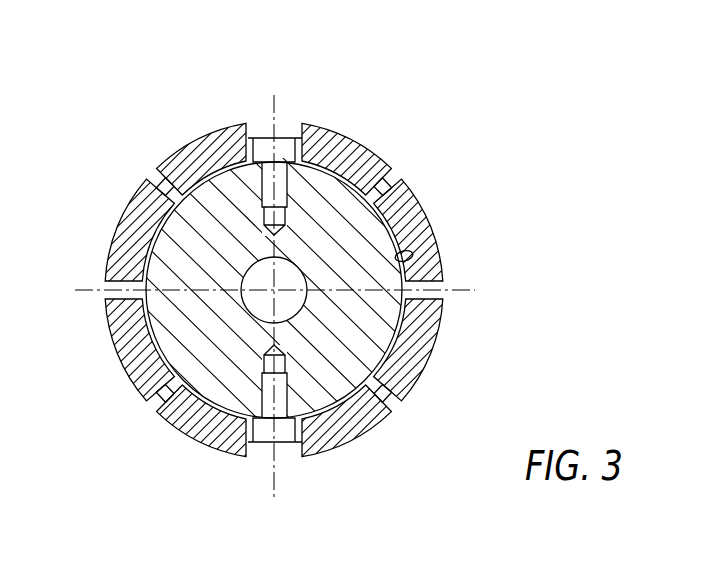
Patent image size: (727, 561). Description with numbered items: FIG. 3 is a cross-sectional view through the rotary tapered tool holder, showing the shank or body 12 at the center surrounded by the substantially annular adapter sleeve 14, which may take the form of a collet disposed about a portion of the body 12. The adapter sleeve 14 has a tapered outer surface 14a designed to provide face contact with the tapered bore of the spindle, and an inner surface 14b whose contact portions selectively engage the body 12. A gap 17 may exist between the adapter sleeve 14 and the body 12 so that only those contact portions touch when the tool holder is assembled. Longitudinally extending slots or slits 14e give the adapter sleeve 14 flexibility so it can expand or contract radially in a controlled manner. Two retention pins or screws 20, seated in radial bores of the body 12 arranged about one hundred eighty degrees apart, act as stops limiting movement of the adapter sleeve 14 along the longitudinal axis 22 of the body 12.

The shank or body 12 is at (196, 240).
The adapter sleeve 14 is at (317, 267).
The tapered outer surface 14a is at (421, 196).
The inner surface 14b is at (414, 253).
The longitudinally extending slots or slits 14e is at (388, 180).
The gap 17 is at (343, 133).
The retention pin or screw 20 is at (286, 145).
The longitudinal axis 22 is at (250, 312).